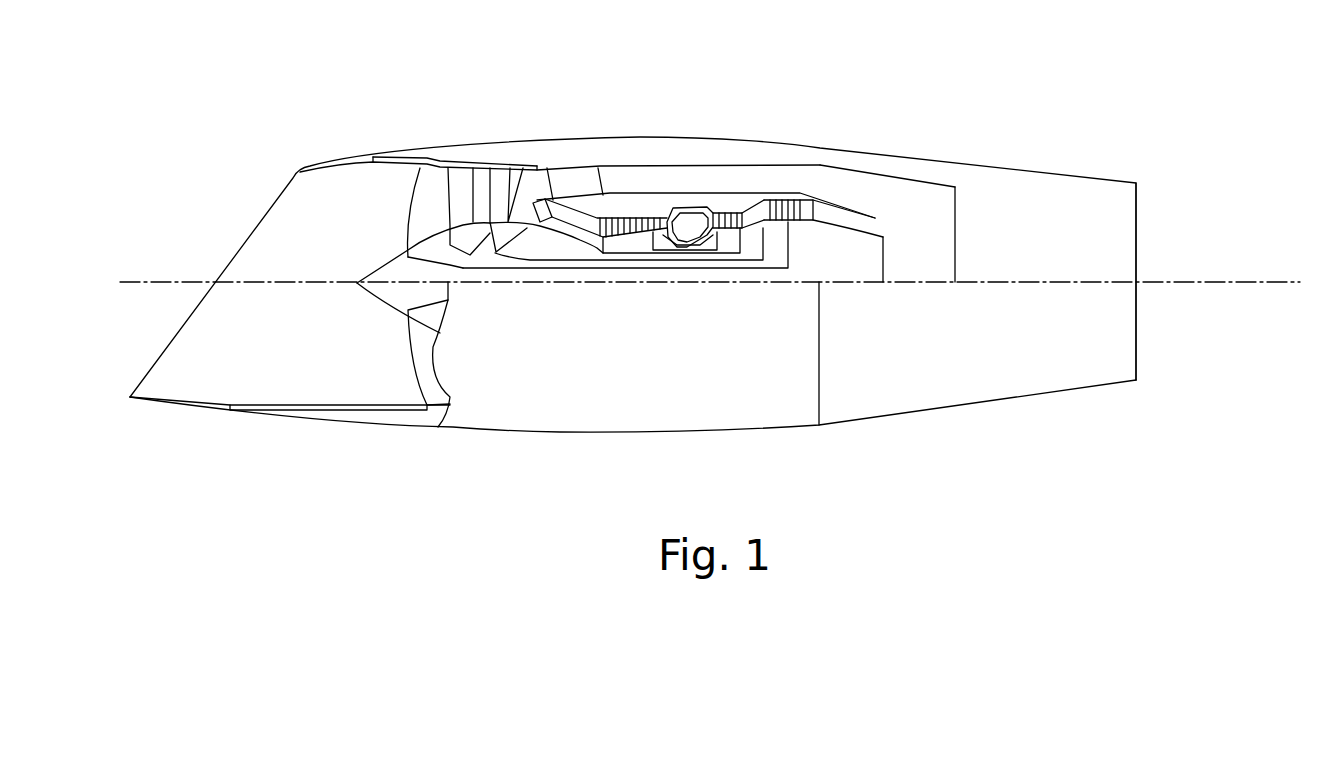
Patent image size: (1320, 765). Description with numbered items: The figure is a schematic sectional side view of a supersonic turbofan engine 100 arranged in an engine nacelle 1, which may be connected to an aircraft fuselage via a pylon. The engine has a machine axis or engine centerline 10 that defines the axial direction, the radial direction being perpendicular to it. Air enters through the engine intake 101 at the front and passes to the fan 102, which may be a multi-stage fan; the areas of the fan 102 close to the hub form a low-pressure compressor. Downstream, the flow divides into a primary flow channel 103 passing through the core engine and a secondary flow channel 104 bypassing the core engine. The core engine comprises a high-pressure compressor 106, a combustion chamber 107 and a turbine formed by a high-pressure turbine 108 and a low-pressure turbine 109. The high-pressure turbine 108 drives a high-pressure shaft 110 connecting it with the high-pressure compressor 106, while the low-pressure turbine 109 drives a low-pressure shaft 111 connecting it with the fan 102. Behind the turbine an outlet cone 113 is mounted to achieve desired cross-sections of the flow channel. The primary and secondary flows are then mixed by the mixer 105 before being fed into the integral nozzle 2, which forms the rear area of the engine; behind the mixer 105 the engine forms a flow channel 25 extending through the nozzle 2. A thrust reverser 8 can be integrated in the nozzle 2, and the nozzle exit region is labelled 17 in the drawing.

The engine nacelle 1 is at (565, 435).
The nozzle 2 is at (1058, 160).
The thrust reverser 8 is at (897, 433).
The engine centerline 10 is at (247, 287).
The nozzle exit 17 is at (1137, 212).
The flow channel 25 is at (938, 203).
The turbofan engine 100 is at (558, 110).
The engine intake 101 is at (337, 167).
The fan 102 is at (467, 150).
The primary flow channel 103 is at (590, 250).
The secondary flow channel 104 is at (628, 183).
The mixer 105 is at (853, 205).
The high-pressure compressor 106 is at (643, 258).
The combustion chamber 107 is at (693, 203).
The high-pressure turbine 108 is at (749, 250).
The low-pressure turbine 109 is at (776, 250).
The high-pressure shaft 110 is at (697, 255).
The low-pressure shaft 111 is at (539, 270).
The outlet cone 113 is at (880, 218).